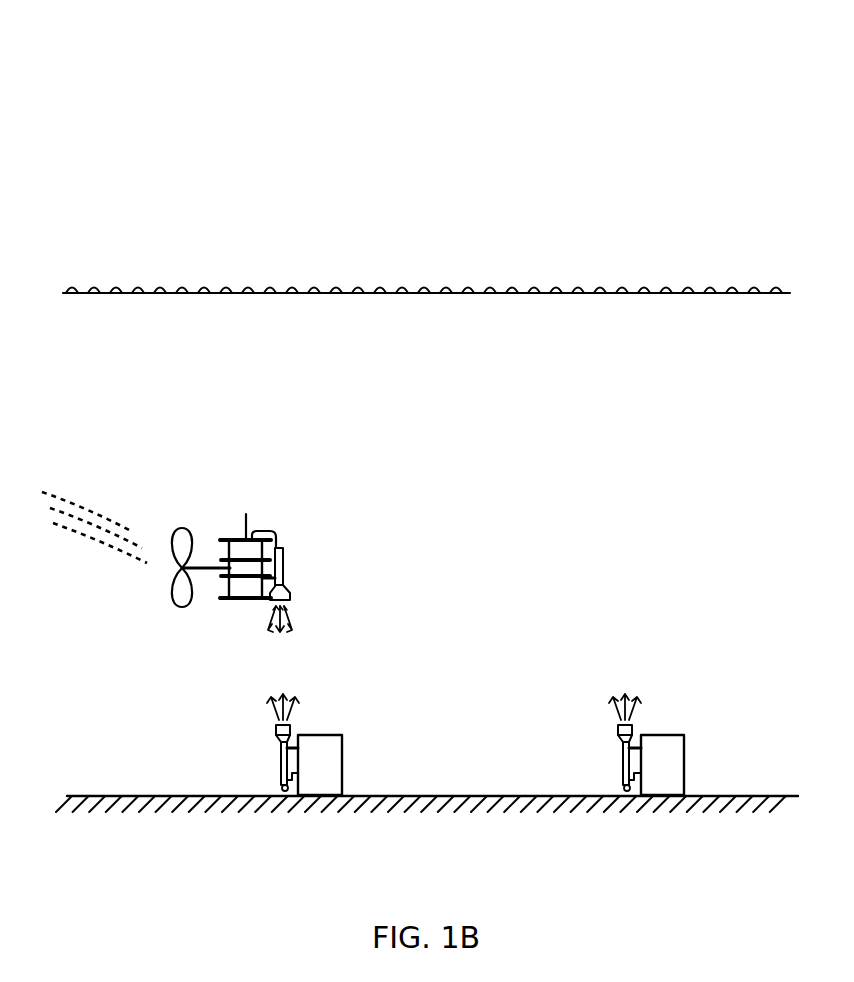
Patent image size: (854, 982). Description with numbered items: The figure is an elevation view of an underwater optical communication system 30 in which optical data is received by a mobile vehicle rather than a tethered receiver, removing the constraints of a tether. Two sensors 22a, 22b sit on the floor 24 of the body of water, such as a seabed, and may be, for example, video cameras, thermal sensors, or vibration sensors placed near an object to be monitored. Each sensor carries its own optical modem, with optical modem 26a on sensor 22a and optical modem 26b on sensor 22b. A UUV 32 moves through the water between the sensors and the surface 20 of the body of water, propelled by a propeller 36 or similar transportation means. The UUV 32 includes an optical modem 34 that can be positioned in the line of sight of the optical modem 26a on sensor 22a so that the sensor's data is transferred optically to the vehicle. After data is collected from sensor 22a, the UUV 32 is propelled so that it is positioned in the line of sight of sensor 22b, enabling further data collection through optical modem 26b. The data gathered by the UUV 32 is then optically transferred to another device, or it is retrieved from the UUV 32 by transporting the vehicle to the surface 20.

The underwater optical communication system 30 is at (707, 68).
The surface 20 is at (560, 292).
The propeller 36 is at (183, 606).
The UUV 32 is at (246, 522).
The optical modem 34 is at (291, 597).
The floor 24 is at (462, 795).
The sensor 22a is at (342, 752).
The sensor 22b is at (684, 752).
The optical modem 26a is at (276, 731).
The optical modem 26b is at (618, 731).